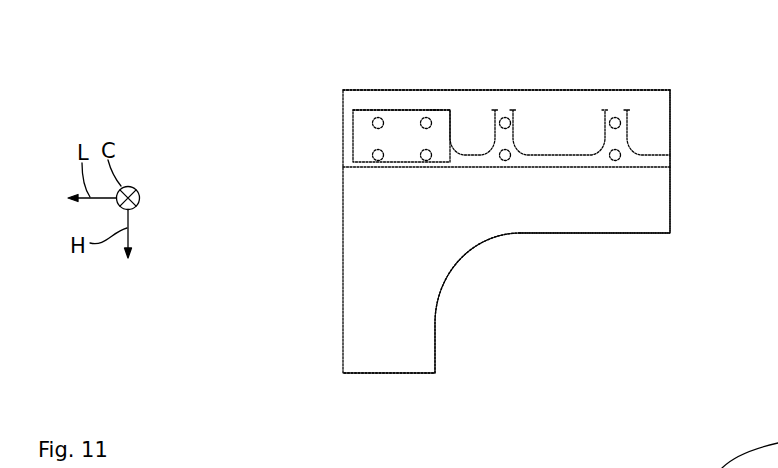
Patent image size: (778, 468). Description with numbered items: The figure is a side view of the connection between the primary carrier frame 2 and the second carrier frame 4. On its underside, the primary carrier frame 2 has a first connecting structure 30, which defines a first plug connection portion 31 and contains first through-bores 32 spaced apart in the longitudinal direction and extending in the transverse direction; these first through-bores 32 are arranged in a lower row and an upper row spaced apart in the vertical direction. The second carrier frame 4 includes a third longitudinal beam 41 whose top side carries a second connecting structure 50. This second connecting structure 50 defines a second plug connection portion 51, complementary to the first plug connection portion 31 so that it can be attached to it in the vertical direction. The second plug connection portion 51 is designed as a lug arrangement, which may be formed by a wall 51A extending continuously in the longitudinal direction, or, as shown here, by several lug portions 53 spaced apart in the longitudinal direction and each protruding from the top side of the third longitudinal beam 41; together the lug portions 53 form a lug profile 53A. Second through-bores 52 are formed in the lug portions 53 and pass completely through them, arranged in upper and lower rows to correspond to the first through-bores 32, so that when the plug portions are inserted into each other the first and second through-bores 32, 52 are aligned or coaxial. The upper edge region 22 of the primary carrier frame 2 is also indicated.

The primary carrier frame 2 is at (667, 89).
The second carrier frame 4 is at (455, 340).
The upper edge 22 is at (562, 90).
The first connecting structure 30 is at (343, 104).
The first plug connection portion 31 is at (660, 130).
The first through-bores 32 is at (482, 156).
The third longitudinal beam 41 is at (671, 200).
The second connecting structure 50 is at (353, 148).
The second plug connection portion 51 is at (395, 110).
The wall 51A is at (452, 143).
The second through-bores 52 is at (381, 186).
The lug portions 53 is at (495, 110).
The lug profile 53A is at (435, 109).